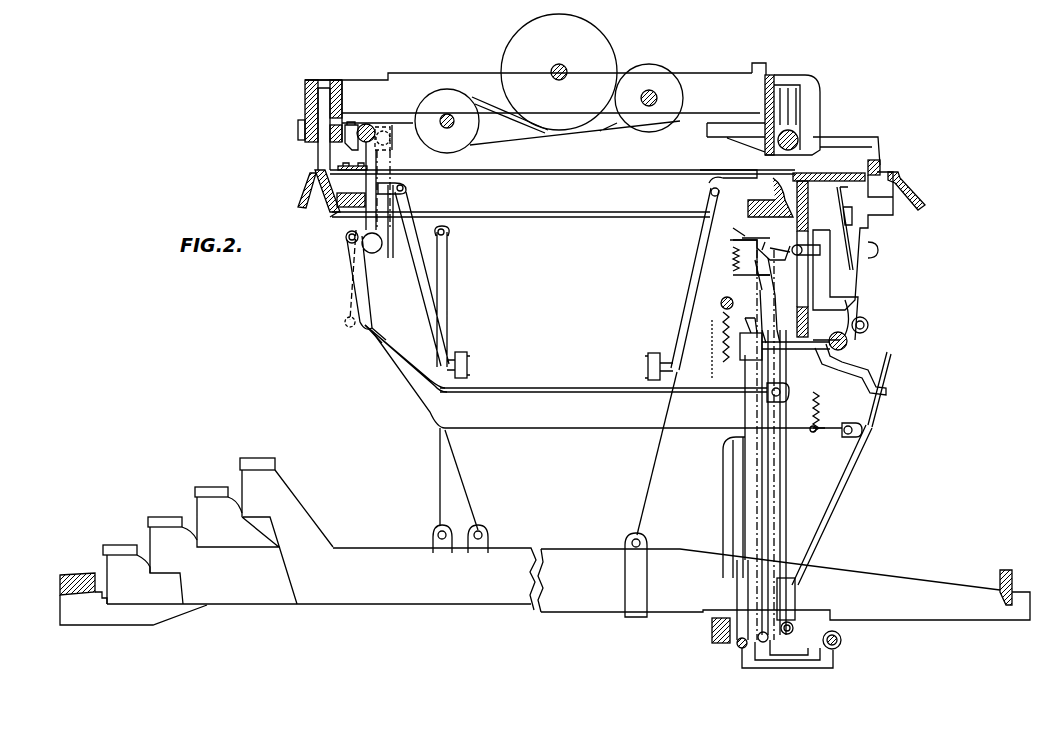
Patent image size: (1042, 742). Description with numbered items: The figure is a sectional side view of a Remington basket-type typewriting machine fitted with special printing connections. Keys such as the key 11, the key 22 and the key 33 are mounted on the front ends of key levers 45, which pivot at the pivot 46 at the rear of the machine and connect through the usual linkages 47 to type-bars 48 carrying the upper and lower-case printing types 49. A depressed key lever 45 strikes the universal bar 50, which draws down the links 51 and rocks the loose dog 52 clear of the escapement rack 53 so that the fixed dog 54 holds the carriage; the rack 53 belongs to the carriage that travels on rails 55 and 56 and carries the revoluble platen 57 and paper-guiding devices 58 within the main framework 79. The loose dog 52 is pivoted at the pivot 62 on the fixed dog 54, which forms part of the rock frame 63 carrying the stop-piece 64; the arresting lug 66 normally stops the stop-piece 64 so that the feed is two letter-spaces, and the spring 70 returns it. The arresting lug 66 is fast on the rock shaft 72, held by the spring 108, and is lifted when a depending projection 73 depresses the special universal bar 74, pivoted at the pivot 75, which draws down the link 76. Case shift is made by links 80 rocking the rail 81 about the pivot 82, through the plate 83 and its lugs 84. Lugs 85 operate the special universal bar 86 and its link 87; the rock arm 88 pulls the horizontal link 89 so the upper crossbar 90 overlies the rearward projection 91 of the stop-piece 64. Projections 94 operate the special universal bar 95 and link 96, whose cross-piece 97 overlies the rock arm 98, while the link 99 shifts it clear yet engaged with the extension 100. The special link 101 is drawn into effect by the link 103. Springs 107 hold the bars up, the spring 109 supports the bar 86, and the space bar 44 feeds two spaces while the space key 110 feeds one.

The key 11 is at (213, 487).
The key 22 is at (173, 517).
The key 33 is at (123, 545).
The space bar 44 is at (76, 575).
The key lever 45 is at (190, 612).
The pivot 46 is at (1002, 586).
The linkage 47 is at (665, 463).
The type-bar 48 is at (683, 306).
The printing types 49 is at (647, 370).
The universal bar 50 is at (712, 636).
The link 51 is at (722, 482).
The loose dog 52 is at (872, 172).
The escapement rack 53 is at (878, 165).
The fixed dog 54 is at (900, 176).
The rail 55 is at (797, 138).
The rail 56 is at (318, 173).
The platen 57 is at (606, 50).
The paper-guiding devices 58 is at (592, 130).
The pivot 62 is at (862, 292).
The rock frame 63 is at (853, 300).
The stop-piece 64 is at (870, 250).
The arresting lug 66 is at (808, 250).
The spring 70 is at (868, 326).
The rock shaft 72 is at (810, 232).
The depending projection 73 is at (736, 642).
The special universal bar 74 is at (740, 650).
The pivot 75 is at (840, 647).
The link 76 is at (740, 468).
The main framework 79 is at (727, 80).
The link 80 is at (443, 274).
The rail 81 is at (369, 124).
The pivot 82 is at (366, 250).
The plate 83 is at (393, 152).
The lug 84 is at (348, 124).
The lug 85 is at (795, 608).
The special universal bar 86 is at (793, 629).
The link 87 is at (847, 482).
The rock arm 88 is at (350, 281).
The horizontal link 89 is at (578, 432).
The upper crossbar 90 is at (890, 368).
The rearward projection 91 is at (851, 368).
The projection 94 is at (775, 640).
The special universal bar 95 is at (762, 650).
The link 96 is at (784, 472).
The cross-piece 97 is at (776, 244).
The rock arm 98 is at (781, 271).
The link 99 is at (548, 394).
The extension 100 is at (738, 420).
The special link 101 is at (772, 308).
The link 103 is at (595, 393).
The spring 107 is at (723, 332).
The spring 108 is at (733, 262).
The spring 109 is at (826, 408).
The space key 110 is at (270, 458).